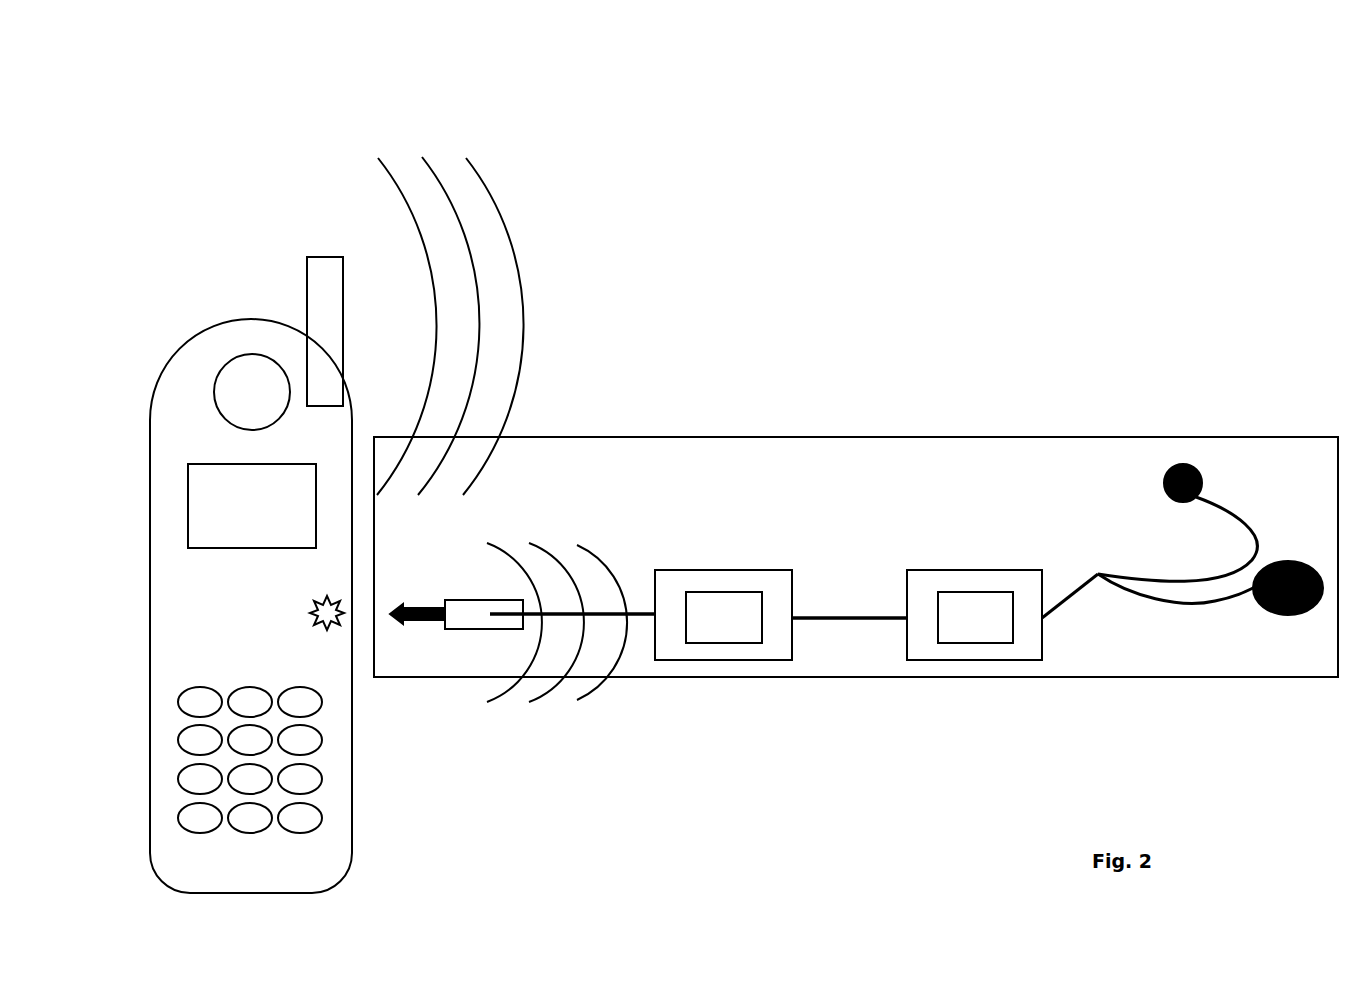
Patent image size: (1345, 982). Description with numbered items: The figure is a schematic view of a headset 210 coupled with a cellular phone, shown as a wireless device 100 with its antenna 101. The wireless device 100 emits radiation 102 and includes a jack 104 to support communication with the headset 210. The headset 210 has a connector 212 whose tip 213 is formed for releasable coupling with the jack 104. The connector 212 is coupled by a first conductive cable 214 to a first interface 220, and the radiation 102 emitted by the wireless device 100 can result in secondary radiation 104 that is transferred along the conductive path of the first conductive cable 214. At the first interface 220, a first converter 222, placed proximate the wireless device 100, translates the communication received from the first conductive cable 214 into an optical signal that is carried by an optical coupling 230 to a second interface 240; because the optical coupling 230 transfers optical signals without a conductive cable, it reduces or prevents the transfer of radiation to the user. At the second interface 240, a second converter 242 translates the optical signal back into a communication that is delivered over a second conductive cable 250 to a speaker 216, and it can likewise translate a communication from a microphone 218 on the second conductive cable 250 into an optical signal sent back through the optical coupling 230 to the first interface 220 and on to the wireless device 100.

The wireless device 100 is at (252, 370).
The antenna 101 is at (236, 112).
The emitting radiation 102 is at (507, 253).
The jack 104 is at (330, 628).
The headset 210 is at (1214, 673).
The connector 212 is at (452, 630).
The tip 213 is at (400, 622).
The first conductive cable 214 is at (647, 614).
The speaker 216 is at (1270, 562).
The microphone 218 is at (1183, 464).
The first interface 220 is at (707, 570).
The first converter 222 is at (747, 612).
The optical coupling 230 is at (877, 618).
The second interface 240 is at (1002, 593).
The second converter 242 is at (1024, 570).
The second conductive cable 250 is at (1094, 574).